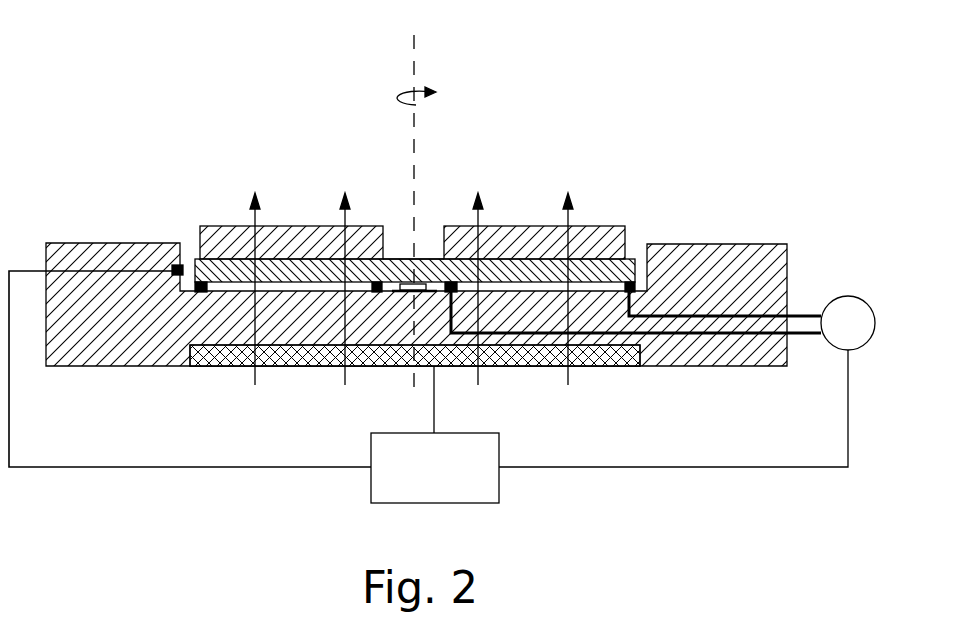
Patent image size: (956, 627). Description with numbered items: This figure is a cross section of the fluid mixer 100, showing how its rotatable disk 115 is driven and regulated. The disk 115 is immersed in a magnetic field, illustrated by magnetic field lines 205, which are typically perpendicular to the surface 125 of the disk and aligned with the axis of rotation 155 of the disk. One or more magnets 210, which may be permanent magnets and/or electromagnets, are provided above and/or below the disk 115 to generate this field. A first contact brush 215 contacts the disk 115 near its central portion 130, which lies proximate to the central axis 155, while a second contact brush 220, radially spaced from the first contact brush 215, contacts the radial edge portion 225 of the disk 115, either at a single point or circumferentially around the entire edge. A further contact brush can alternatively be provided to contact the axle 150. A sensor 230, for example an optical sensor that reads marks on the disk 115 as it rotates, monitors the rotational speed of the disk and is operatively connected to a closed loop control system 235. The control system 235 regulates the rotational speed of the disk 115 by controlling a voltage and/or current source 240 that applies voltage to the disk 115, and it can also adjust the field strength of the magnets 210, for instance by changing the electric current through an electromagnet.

The fluid mixer 100 is at (91, 111).
The rotatable disk 115 is at (391, 272).
The surface of the disk 125 is at (595, 252).
The central portion 130 is at (442, 258).
The axle 150 is at (404, 290).
The axis of rotation 155 is at (416, 50).
The magnetic field lines 205 is at (345, 217).
The magnets 210 is at (603, 367).
The first contact brush 215 is at (428, 275).
The second contact brush 220 is at (636, 288).
The radial edge portion 225 is at (633, 260).
The sensor 230 is at (184, 262).
The closed loop control system 235 is at (482, 503).
The voltage and/or current source 240 is at (863, 298).